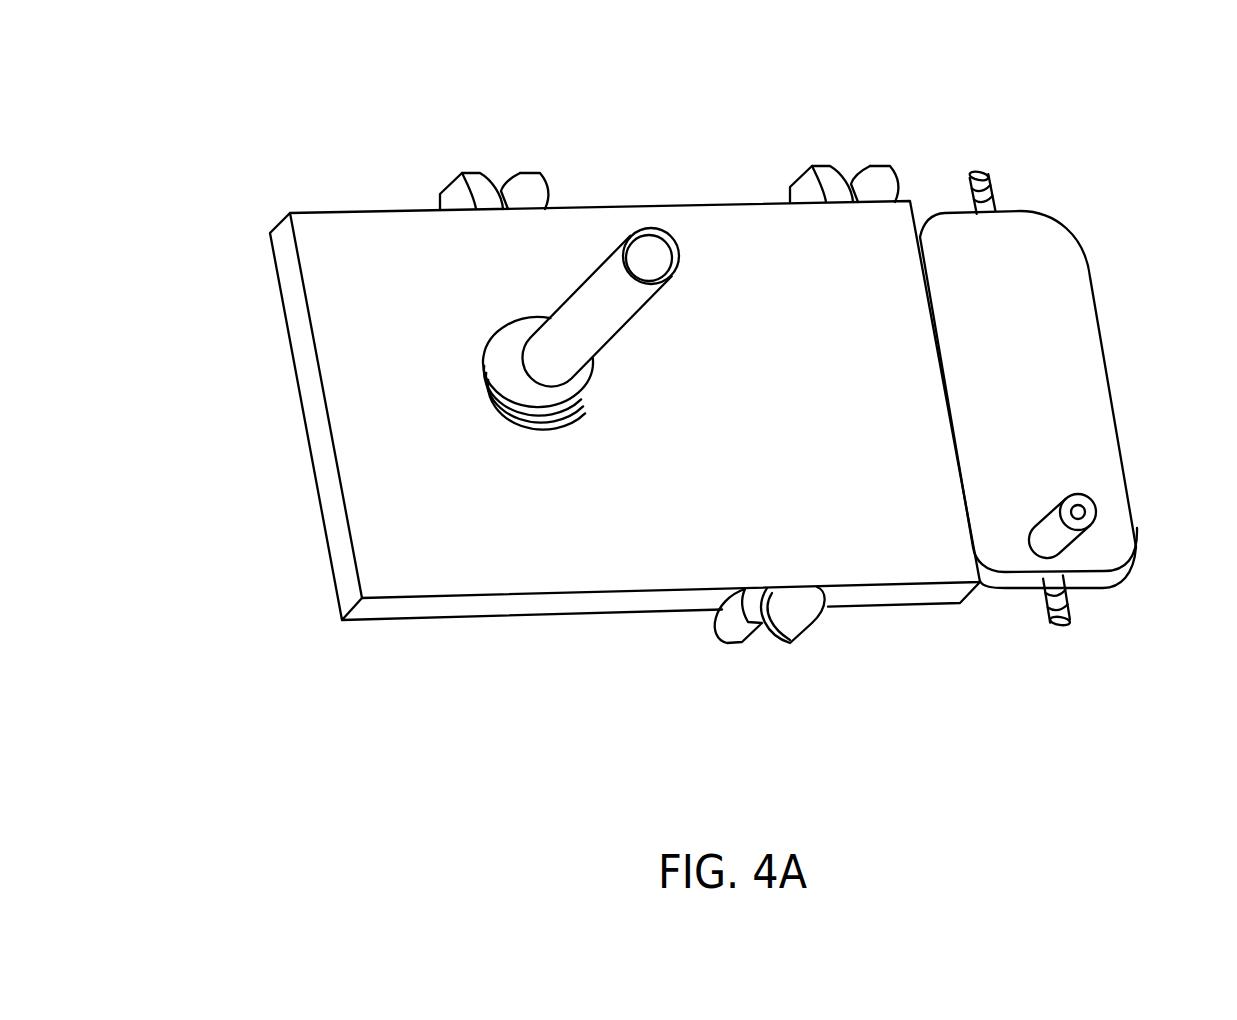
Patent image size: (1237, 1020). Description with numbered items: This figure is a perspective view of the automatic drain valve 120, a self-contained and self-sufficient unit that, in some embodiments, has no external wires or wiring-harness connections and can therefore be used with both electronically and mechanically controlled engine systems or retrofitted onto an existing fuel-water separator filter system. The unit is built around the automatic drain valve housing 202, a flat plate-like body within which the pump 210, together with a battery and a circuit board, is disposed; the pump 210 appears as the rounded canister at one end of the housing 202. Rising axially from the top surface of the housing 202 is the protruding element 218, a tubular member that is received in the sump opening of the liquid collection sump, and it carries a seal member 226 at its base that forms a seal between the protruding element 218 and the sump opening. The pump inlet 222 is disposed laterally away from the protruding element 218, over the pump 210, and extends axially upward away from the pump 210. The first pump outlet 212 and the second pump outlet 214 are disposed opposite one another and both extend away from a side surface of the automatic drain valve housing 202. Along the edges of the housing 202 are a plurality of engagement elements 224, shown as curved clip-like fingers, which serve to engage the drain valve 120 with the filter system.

The automatic drain valve 120 is at (248, 121).
The automatic drain valve housing 202 is at (620, 630).
The pump 210 is at (1110, 368).
The first pump outlet 212 is at (980, 167).
The second pump outlet 214 is at (1060, 626).
The protruding element 218 is at (580, 300).
The pump inlet 222 is at (1083, 515).
The engagement elements 224 is at (472, 171).
The seal member 226 is at (478, 372).